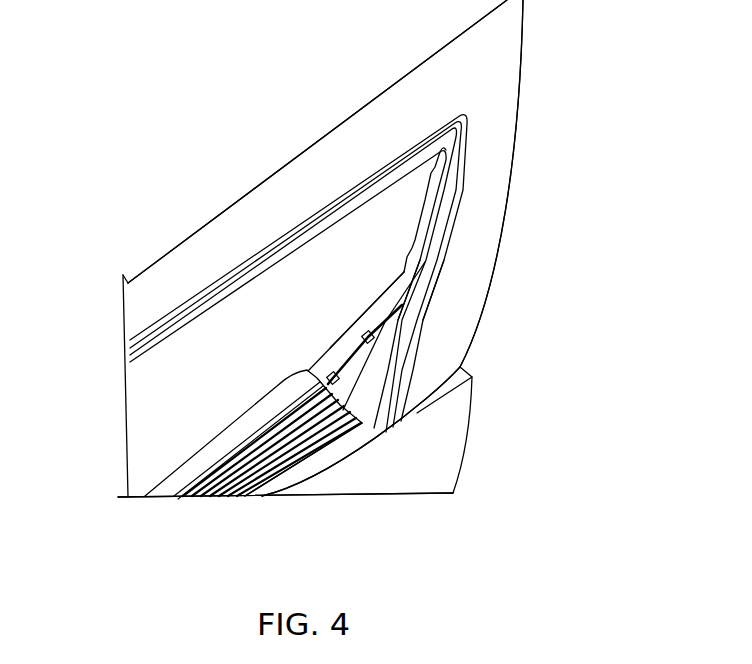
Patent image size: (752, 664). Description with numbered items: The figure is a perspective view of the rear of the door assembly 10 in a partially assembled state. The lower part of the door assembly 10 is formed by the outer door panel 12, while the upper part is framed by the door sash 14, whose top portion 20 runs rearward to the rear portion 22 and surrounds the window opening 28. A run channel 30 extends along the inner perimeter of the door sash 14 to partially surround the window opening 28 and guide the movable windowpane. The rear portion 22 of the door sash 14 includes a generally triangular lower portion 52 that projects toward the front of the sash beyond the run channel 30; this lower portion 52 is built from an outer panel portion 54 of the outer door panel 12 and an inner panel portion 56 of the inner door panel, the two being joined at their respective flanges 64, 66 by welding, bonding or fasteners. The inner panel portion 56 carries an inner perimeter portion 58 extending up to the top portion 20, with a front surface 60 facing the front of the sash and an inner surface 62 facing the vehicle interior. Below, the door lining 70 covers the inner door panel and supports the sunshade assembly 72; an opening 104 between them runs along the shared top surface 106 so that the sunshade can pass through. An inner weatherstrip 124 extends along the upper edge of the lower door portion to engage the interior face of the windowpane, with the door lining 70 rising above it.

The door assembly 10 is at (556, 43).
The outer door panel 12 is at (440, 450).
The door sash 14 is at (182, 242).
The top portion 20 is at (292, 182).
The rear portion 22 is at (492, 152).
The window opening 28 is at (197, 417).
The run channel 30 is at (437, 238).
The lower portion 52 is at (354, 304).
The outer panel portion 54 is at (407, 362).
The inner panel portion 56 is at (330, 353).
The inner perimeter portion 58 is at (427, 200).
The front surface 60 is at (373, 317).
The inner surface 62 is at (380, 272).
The flange 64 is at (415, 333).
The flange 66 is at (350, 333).
The door lining 70 is at (248, 404).
The sunshade assembly 72 is at (213, 488).
The opening 104 is at (182, 498).
The top surface 106 is at (158, 498).
The inner weatherstrip 124 is at (302, 468).